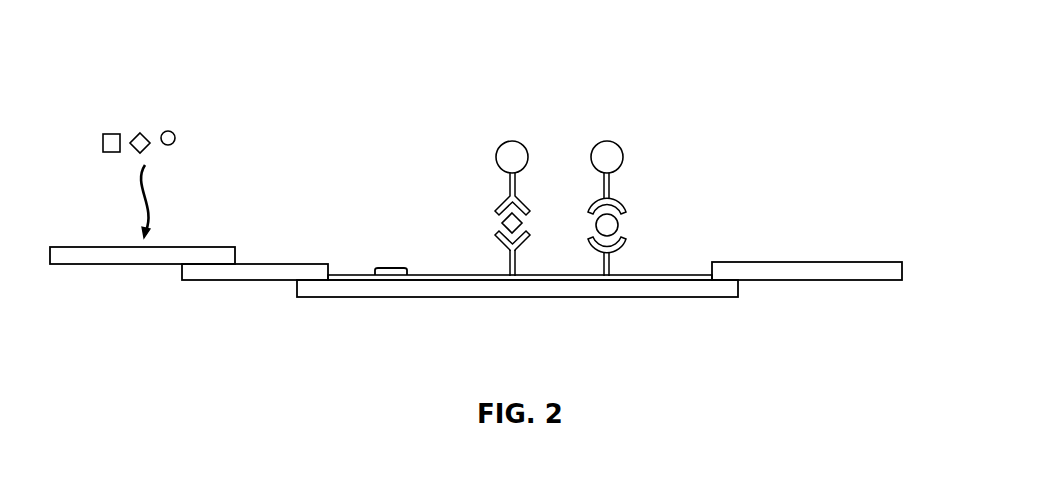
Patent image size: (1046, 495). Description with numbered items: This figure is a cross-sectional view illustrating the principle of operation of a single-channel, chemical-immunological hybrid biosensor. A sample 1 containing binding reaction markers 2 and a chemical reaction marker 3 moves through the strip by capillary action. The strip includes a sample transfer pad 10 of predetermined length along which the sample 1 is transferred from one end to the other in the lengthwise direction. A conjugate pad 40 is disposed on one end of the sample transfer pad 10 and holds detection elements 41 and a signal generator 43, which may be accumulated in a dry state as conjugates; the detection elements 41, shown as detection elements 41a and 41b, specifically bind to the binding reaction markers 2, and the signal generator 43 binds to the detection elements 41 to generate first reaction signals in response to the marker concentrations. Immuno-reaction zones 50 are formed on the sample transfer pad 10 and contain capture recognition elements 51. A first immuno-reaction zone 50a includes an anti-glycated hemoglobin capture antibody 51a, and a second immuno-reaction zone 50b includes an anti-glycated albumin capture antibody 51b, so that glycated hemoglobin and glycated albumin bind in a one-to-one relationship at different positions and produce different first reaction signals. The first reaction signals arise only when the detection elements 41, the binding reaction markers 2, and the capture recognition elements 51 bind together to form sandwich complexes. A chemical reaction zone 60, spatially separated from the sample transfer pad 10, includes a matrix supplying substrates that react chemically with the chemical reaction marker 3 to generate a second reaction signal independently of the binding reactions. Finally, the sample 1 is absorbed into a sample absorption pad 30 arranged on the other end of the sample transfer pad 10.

The sample 1 is at (220, 73).
The binding reaction markers 2 is at (158, 117).
The chemical reaction marker 3 is at (104, 133).
The sample transfer pad 10 is at (433, 287).
The sample absorption pad 30 is at (811, 270).
The conjugate pad 40 is at (271, 268).
The detection elements 41 is at (554, 211).
The detection element 41a is at (502, 203).
The detection element 41b is at (613, 188).
The signal generator 43 is at (517, 152).
The immuno-reaction zones 50 is at (545, 308).
The first immuno-reaction zone 50a is at (510, 281).
The second immuno-reaction zone 50b is at (607, 279).
The capture recognition elements 51 is at (520, 277).
The anti-glycated hemoglobin capture antibody 51a is at (512, 263).
The anti-glycated albumin capture antibody 51b is at (606, 264).
The chemical reaction zone 60 is at (390, 267).